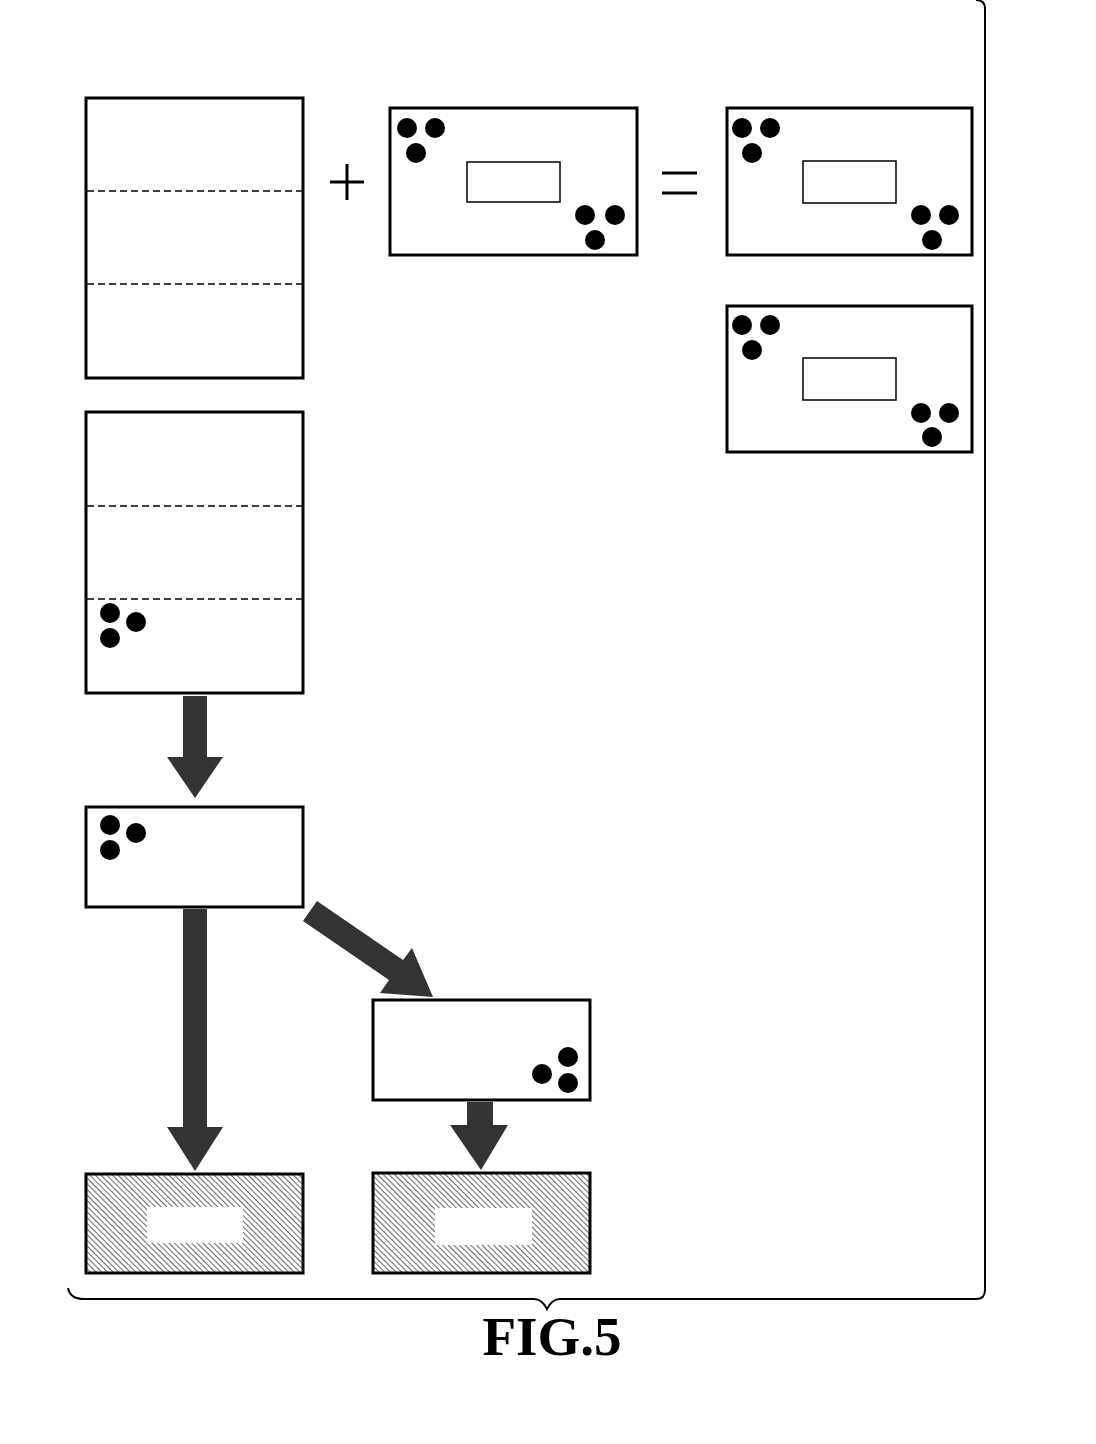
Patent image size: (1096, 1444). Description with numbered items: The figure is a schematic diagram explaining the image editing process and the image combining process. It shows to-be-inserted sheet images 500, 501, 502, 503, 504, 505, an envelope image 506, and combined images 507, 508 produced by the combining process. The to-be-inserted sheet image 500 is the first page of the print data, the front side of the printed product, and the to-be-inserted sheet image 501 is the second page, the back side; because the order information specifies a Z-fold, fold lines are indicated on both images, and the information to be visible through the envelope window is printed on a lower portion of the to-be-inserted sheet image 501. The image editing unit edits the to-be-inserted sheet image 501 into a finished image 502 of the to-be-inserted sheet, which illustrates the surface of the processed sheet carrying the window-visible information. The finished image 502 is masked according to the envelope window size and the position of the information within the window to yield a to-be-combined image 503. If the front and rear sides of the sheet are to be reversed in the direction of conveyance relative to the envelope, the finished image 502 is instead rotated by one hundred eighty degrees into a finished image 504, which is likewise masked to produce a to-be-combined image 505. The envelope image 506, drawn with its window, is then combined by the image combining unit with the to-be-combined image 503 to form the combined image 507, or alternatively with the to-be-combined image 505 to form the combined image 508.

The to-be-inserted sheet image 500 is at (206, 106).
The to-be-inserted sheet image 501 is at (302, 466).
The finished image of the to-be-inserted sheet 502 is at (302, 834).
The to-be-combined image 503 is at (267, 1180).
The finished image 504 is at (588, 1021).
The to-be-combined image 505 is at (588, 1213).
The envelope image 506 is at (529, 112).
The combined image 507 is at (857, 112).
The combined image 508 is at (864, 455).